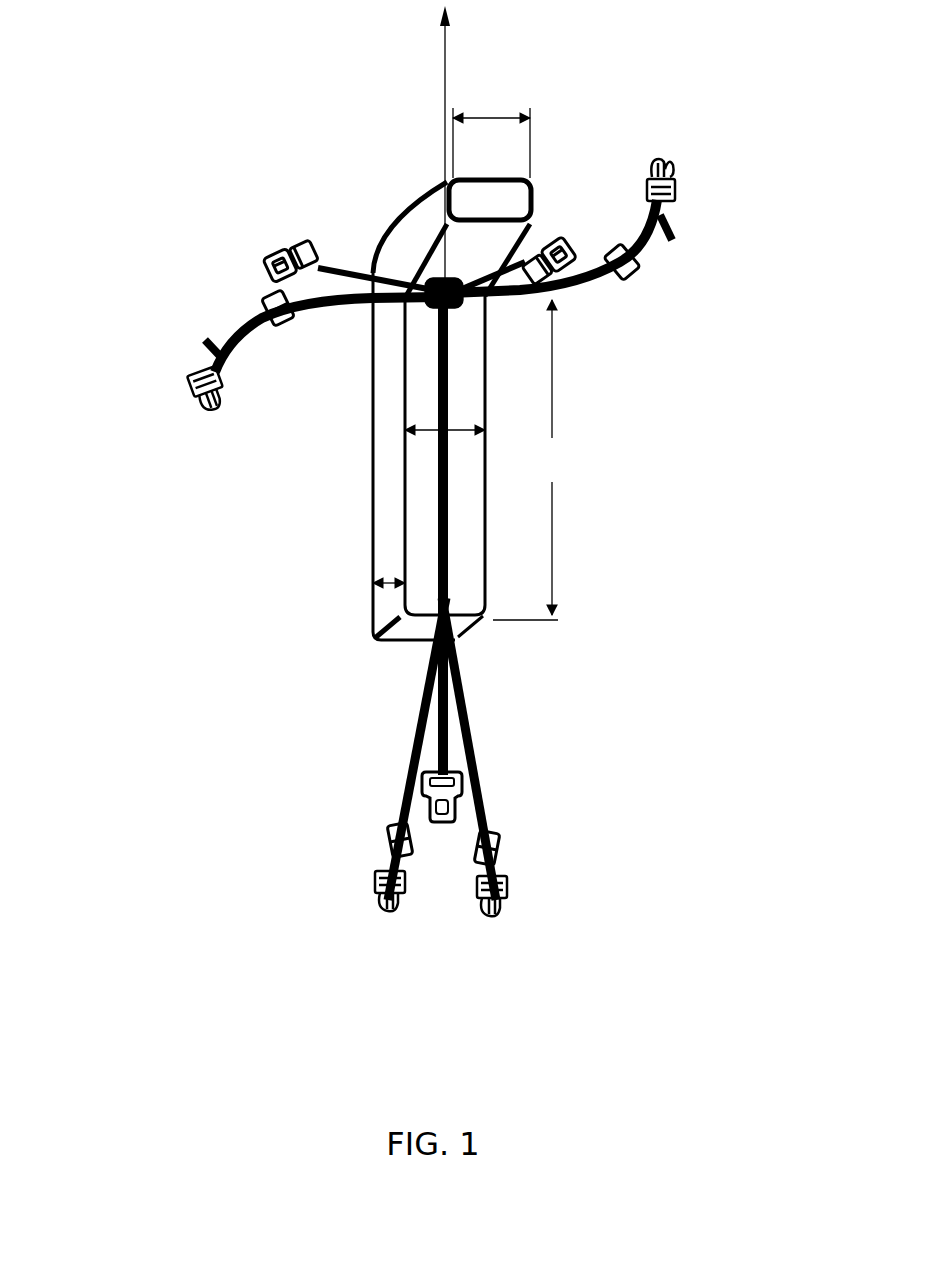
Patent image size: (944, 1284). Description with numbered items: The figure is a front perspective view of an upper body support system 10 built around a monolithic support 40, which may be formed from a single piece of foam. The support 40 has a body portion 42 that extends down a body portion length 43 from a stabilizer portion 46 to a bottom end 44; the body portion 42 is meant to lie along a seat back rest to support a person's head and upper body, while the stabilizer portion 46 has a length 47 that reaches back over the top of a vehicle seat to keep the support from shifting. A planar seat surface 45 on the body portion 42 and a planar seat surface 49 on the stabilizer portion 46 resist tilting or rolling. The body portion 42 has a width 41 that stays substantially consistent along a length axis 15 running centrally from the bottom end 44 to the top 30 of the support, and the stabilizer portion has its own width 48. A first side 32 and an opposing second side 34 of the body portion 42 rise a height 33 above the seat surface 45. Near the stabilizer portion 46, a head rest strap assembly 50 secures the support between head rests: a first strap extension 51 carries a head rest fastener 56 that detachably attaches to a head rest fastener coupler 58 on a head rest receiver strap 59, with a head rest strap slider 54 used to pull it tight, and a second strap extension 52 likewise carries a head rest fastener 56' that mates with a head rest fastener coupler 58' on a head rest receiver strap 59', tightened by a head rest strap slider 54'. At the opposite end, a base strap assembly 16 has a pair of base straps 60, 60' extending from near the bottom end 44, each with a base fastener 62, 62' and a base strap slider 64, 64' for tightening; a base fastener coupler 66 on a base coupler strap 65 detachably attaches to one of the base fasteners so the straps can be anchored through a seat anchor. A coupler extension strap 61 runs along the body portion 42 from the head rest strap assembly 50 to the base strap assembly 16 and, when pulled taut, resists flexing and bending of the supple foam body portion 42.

The upper body support system 10 is at (252, 110).
The length axis 15 is at (445, 57).
The base strap assembly 16 is at (433, 749).
The top of the support 30 is at (420, 200).
The first side 32 is at (395, 423).
The height 33 is at (372, 583).
The second side 34 is at (487, 397).
The support 40 is at (393, 467).
The width of the body portion 41 is at (457, 423).
The body portion 42 is at (393, 539).
The body portion length 43 is at (529, 460).
The bottom end 44 is at (403, 637).
The seat surface of the body portion 45 is at (423, 462).
The stabilizer portion 46 is at (544, 187).
The length of the stabilizer portion 47 is at (445, 178).
The width of the stabilizer portion 48 is at (492, 118).
The seat surface of the stabilizer portion 49 is at (473, 247).
The head rest strap assembly 50 is at (403, 322).
The first strap extension 51 is at (320, 305).
The second strap extension 52 is at (388, 341).
The head rest strap slider 54 is at (228, 297).
The head rest strap slider 54' is at (680, 276).
The head rest fastener 56 is at (270, 355).
The head rest fastener 56' is at (624, 203).
The head rest fastener coupler 58 is at (299, 241).
The head rest fastener coupler 58' is at (547, 231).
The head rest receiver strap 59 is at (284, 210).
The head rest receiver strap 59' is at (552, 220).
The base strap 60 is at (375, 749).
The base strap 60' is at (499, 749).
The coupler extension strap 61 is at (450, 512).
The base fastener 62 is at (340, 883).
The base fastener 62' is at (548, 881).
The base strap slider 64 is at (345, 827).
The base strap slider 64' is at (529, 833).
The base coupler strap 65 is at (420, 703).
The base fastener coupler 66 is at (460, 790).